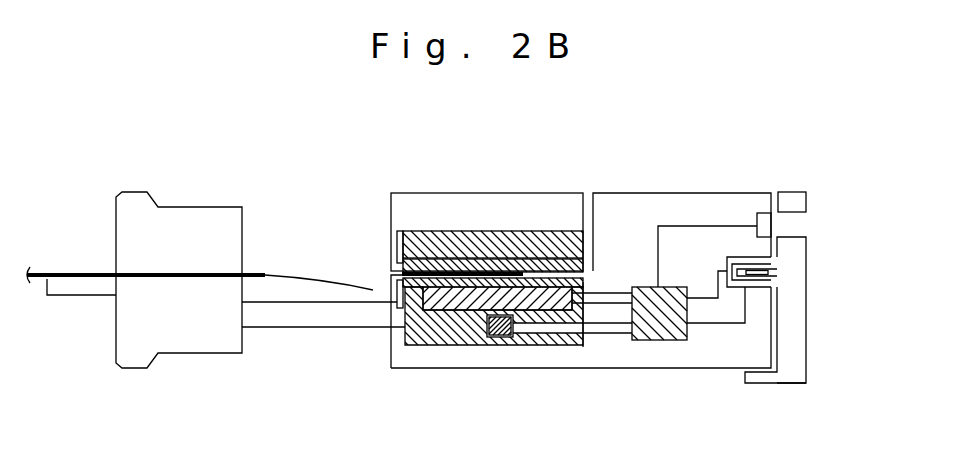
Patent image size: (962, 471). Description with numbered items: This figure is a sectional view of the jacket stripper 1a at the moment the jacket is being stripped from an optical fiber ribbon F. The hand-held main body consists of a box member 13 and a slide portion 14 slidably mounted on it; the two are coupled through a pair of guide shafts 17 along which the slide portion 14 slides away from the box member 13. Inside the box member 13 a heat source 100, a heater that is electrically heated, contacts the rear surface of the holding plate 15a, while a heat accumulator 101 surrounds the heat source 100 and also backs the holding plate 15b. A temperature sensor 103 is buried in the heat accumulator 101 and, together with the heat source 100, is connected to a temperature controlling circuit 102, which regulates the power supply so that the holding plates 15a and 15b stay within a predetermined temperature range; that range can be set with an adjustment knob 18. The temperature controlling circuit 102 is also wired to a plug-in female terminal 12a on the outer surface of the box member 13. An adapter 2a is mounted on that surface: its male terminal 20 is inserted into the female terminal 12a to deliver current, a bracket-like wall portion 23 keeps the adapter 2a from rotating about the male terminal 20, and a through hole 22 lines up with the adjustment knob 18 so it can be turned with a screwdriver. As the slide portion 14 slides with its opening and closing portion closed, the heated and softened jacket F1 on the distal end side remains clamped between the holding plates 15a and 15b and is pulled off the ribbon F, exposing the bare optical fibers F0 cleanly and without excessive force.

The slide portion 14 is at (191, 342).
The optical fiber ribbon F is at (83, 270).
The bare optical fibers F0 is at (311, 277).
The jacket on the distal end side F1 is at (448, 268).
The guide shafts 17 is at (327, 317).
The heat source 100 is at (560, 347).
The heat accumulator 101 is at (427, 257).
The holding plate 15b is at (495, 267).
The holding plate 15a is at (543, 282).
The temperature sensor 103 is at (498, 347).
The temperature controlling circuit 102 is at (658, 340).
The jacket stripper 1a is at (612, 193).
The box member 13 is at (718, 353).
The female terminal 12a is at (737, 257).
The male terminal 20 is at (768, 281).
The adjustment knob 18 is at (765, 222).
The through hole 22 is at (797, 225).
The adapter 2a is at (807, 384).
The wall portion 23 is at (757, 383).